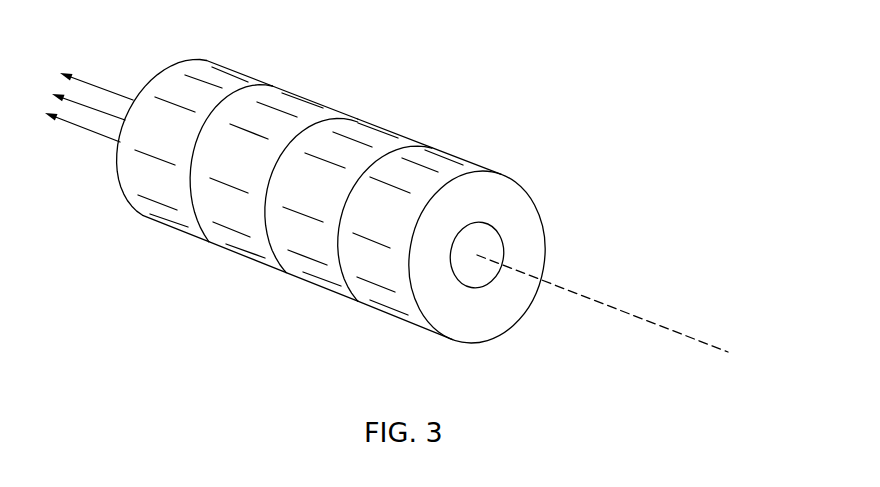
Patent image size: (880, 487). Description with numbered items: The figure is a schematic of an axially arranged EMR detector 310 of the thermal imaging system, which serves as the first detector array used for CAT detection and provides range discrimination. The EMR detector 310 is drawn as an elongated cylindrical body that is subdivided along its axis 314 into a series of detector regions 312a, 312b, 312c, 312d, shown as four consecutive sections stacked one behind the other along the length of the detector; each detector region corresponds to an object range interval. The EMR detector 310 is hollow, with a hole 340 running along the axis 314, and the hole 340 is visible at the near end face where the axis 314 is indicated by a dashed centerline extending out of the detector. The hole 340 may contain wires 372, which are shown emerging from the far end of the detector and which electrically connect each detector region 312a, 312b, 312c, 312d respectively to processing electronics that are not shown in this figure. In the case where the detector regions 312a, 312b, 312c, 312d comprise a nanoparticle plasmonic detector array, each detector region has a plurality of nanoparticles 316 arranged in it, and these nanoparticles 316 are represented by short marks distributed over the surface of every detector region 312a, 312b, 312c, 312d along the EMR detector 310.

The axially arranged EMR detector 310 is at (399, 211).
The detector region 312a is at (172, 227).
The detector region 312b is at (245, 256).
The detector region 312c is at (320, 286).
The detector region 312d is at (400, 318).
The axis 314 is at (658, 322).
The nanoparticles 316 is at (223, 87).
The hole 340 is at (493, 238).
The wires 372 is at (105, 88).